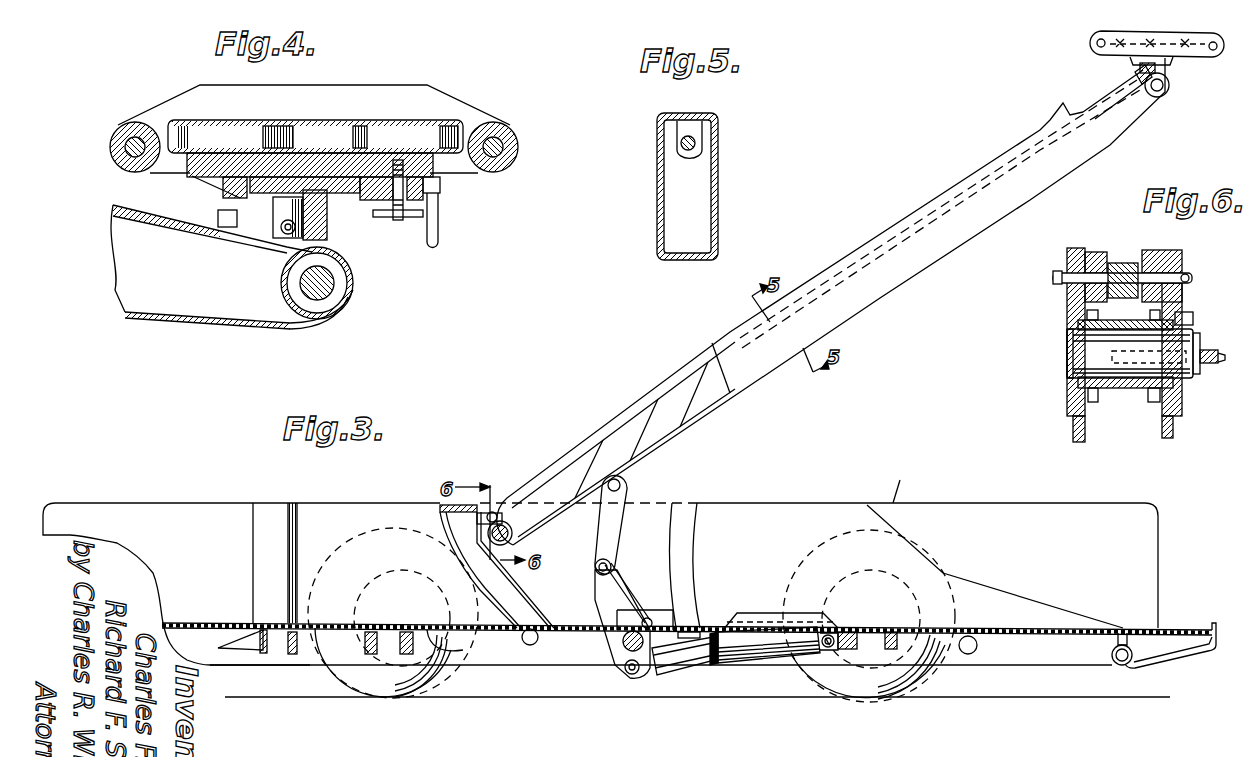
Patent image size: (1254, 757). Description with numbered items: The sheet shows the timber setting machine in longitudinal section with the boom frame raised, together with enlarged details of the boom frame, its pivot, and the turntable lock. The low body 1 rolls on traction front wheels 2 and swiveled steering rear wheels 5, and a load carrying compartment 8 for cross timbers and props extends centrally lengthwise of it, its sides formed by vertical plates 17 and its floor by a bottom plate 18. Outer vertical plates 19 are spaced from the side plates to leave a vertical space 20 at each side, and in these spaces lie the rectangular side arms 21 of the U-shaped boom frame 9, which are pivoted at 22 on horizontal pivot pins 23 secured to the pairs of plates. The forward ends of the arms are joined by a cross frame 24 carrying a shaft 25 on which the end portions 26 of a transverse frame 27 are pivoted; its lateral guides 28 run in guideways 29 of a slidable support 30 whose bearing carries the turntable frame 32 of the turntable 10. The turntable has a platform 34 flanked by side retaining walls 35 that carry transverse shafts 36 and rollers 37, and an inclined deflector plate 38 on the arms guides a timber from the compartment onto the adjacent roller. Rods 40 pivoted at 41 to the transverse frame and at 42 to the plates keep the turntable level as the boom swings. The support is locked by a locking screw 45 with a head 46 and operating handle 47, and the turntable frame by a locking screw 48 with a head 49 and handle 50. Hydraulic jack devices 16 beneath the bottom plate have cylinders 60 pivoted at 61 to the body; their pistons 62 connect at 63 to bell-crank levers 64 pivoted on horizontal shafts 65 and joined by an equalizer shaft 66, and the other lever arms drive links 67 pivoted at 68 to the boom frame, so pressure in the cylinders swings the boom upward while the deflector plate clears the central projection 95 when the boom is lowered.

In FIG. 3, the body 1 is at (903, 491).
In FIG. 3, the front wheels 2 is at (925, 672).
In FIG. 3, the rear wheels 5 is at (362, 672).
In FIG. 3, the load carrying compartment 8 is at (350, 528).
In FIG. 3, the boom frame 9 is at (889, 292).
In FIG. 4, the boom frame 9 is at (133, 320).
In FIG. 5, the boom frame 9 is at (718, 242).
In FIG. 6, the boom frame 9 is at (1125, 400).
In FIG. 3, the turntable 10 is at (1197, 56).
In FIG. 4, the turntable 10 is at (427, 87).
In FIG. 3, the hydraulic jack devices 16 is at (745, 680).
In FIG. 3, the vertical plates 17 is at (745, 510).
In FIG. 6, the vertical plates 17 is at (1172, 312).
In FIG. 3, the bottom plate 18 is at (522, 652).
In FIG. 3, the vertical plates 19 is at (700, 522).
In FIG. 6, the vertical plates 19 is at (1067, 305).
In FIG. 3, the vertical space 20 is at (668, 522).
In FIG. 3, the side arms 21 is at (836, 262).
In FIG. 4, the side arms 21 is at (183, 307).
In FIG. 5, the side arms 21 is at (718, 160).
In FIG. 3, the pivot 22 is at (488, 541).
In FIG. 6, the pivot 22 is at (1195, 380).
In FIG. 3, the pivot pins 23 is at (490, 533).
In FIG. 6, the pivot pins 23 is at (1082, 360).
In FIG. 4, the cross frame 24 is at (342, 302).
In FIG. 3, the shaft 25 is at (1157, 95).
In FIG. 4, the shaft 25 is at (322, 298).
In FIG. 3, the end portions 26 is at (1168, 82).
In FIG. 3, the transverse frame 27 is at (1143, 62).
In FIG. 3, the lateral horizontal guides 28 is at (1160, 66).
In FIG. 4, the lateral horizontal guides 28 is at (370, 147).
In FIG. 4, the guideways 29 is at (265, 195).
In FIG. 4, the slidable support 30 is at (400, 181).
In FIG. 4, the turntable frame 32 is at (358, 120).
In FIG. 3, the platform 34 is at (1199, 31).
In FIG. 4, the platform 34 is at (213, 120).
In FIG. 3, the side retaining walls 35 is at (1122, 31).
In FIG. 4, the side retaining walls 35 is at (300, 120).
In FIG. 3, the transverse shafts 36 is at (1097, 45).
In FIG. 4, the transverse shafts 36 is at (125, 155).
In FIG. 4, the rollers 37 is at (116, 142).
In FIG. 3, the deflector plate 38 is at (1058, 108).
In FIG. 3, the rods 40 is at (1112, 88).
In FIG. 4, the rods 40 is at (220, 215).
In FIG. 5, the rods 40 is at (695, 141).
In FIG. 6, the rods 40 is at (1121, 263).
In FIG. 3, the pivotal connection 41 is at (1140, 86).
In FIG. 4, the pivotal connection 41 is at (285, 234).
In FIG. 3, the pivotal connection 42 is at (500, 512).
In FIG. 6, the pivotal connection 42 is at (1150, 262).
In FIG. 4, the locking screw 45 is at (440, 206).
In FIG. 4, the head 46 is at (372, 202).
In FIG. 4, the operating handle 47 is at (440, 238).
In FIG. 4, the locking screw 48 is at (407, 225).
In FIG. 4, the head 49 is at (445, 120).
In FIG. 4, the handle 50 is at (395, 222).
In FIG. 3, the cylinders 60 is at (773, 666).
In FIG. 3, the pivot 61 is at (832, 652).
In FIG. 3, the pistons 62 is at (697, 666).
In FIG. 3, the pivotal connection 63 is at (632, 675).
In FIG. 3, the bell-crank levers 64 is at (622, 645).
In FIG. 3, the horizontal shafts 65 is at (625, 590).
In FIG. 3, the equalizer shaft 66 is at (652, 619).
In FIG. 3, the links 67 is at (617, 532).
In FIG. 3, the pivotal connection 68 is at (640, 428).
In FIG. 3, the central projection 95 is at (1170, 652).